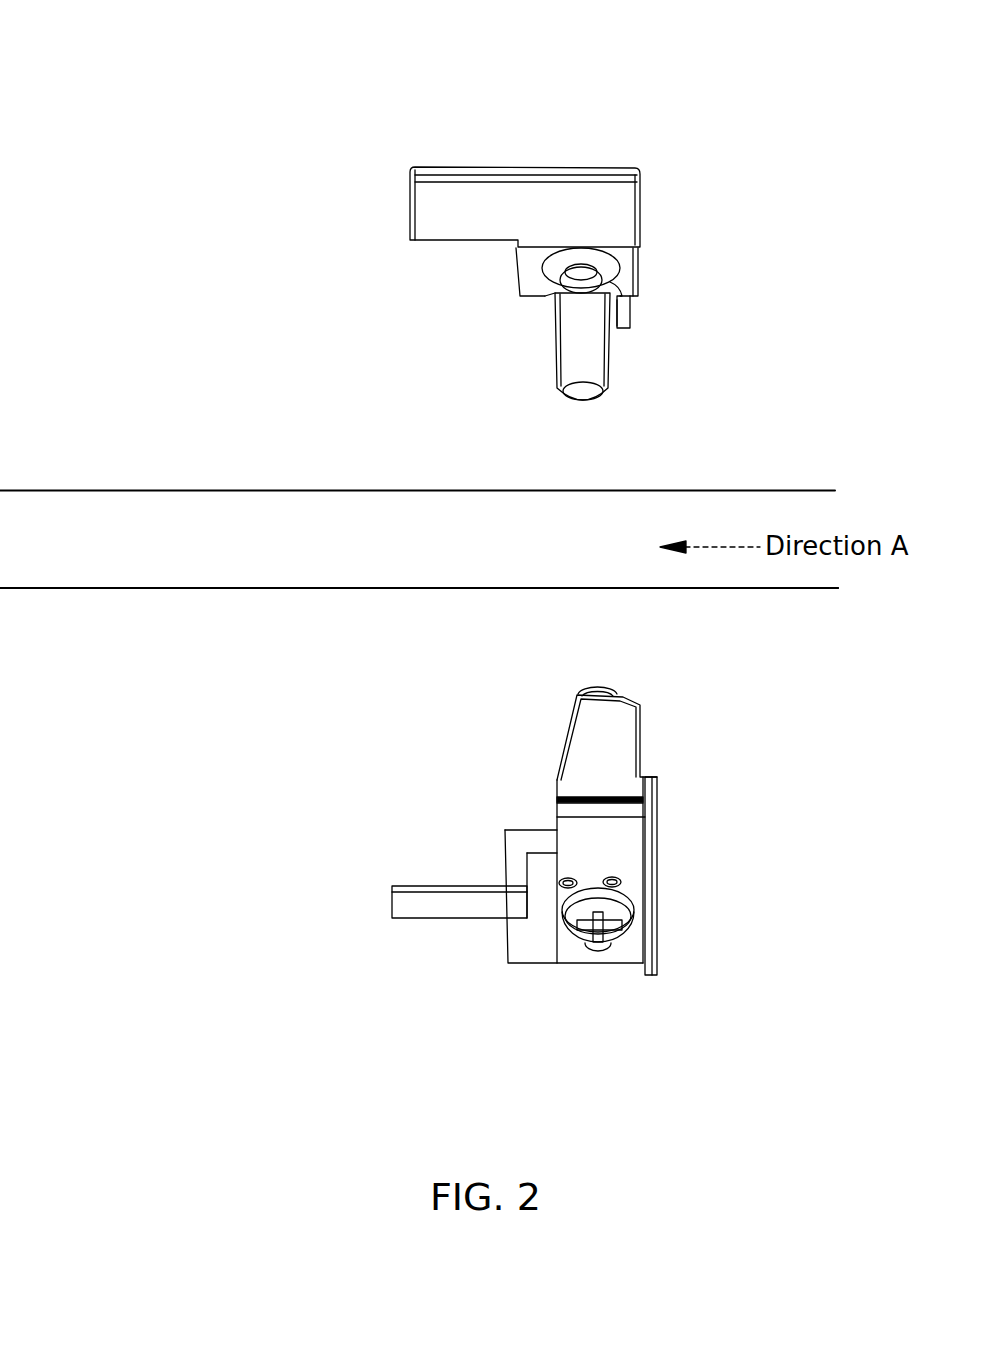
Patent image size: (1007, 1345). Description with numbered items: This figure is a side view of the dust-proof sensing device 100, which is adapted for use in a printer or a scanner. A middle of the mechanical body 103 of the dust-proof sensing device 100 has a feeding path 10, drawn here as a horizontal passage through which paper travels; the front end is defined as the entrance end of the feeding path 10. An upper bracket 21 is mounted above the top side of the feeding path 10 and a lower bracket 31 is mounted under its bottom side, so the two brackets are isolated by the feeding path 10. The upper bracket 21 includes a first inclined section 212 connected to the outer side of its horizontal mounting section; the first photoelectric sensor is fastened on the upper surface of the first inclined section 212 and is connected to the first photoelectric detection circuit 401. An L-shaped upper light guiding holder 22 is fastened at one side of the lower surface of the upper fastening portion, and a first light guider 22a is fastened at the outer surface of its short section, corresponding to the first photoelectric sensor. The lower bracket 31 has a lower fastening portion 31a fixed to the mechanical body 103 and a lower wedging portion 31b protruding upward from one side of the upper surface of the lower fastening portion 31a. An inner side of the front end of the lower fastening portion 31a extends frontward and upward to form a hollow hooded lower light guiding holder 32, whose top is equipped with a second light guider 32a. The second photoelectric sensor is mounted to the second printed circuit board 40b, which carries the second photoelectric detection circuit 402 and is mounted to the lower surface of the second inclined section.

The dust-proof sensing device 100 is at (77, 32).
The feeding path 10 is at (325, 550).
The mechanical body 103 is at (128, 605).
The upper bracket 21 is at (375, 215).
The first inclined section 212 is at (630, 280).
The first photoelectric detection circuit 401 is at (622, 313).
The L-shaped upper light guiding holder 22 is at (597, 357).
The first light guider 22a is at (586, 394).
The lower bracket 31 is at (375, 901).
The lower fastening portion 31a is at (467, 888).
The lower wedging portion 31b is at (508, 868).
The hooded lower light guiding holder 32 is at (640, 727).
The second light guider 32a is at (590, 690).
The second photoelectric detection circuit 402 is at (633, 818).
The second printed circuit board 40b is at (630, 872).